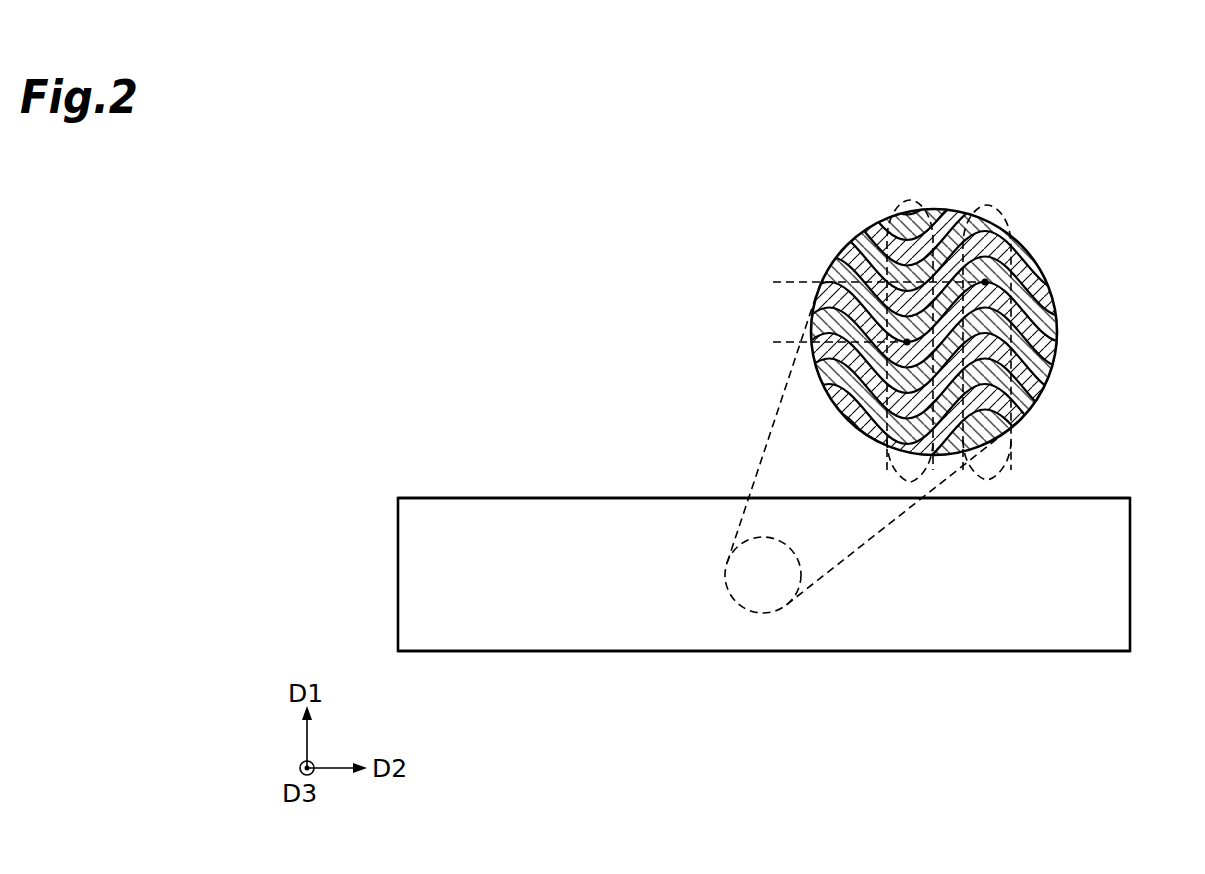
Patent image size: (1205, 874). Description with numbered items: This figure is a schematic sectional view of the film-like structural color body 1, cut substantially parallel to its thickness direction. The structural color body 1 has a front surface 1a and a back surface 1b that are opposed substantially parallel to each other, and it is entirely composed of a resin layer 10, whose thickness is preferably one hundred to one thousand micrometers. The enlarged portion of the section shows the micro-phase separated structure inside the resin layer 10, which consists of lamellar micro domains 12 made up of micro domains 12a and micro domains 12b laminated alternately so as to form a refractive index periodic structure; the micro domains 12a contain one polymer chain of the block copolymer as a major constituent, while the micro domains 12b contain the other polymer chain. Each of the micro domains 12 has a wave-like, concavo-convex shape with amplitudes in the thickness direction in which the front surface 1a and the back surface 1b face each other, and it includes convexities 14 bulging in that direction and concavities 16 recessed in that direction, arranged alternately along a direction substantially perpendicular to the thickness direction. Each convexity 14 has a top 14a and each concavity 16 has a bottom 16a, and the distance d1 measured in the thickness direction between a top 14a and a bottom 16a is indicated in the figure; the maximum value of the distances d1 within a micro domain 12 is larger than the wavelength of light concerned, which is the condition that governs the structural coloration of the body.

The structural color body 1 is at (726, 487).
The front surface 1a is at (428, 498).
The back surface 1b is at (428, 651).
The resin layer 10 is at (410, 576).
The lamellar micro domains 12 is at (962, 332).
The micro domain 12a is at (1024, 252).
The micro domain 12b is at (1041, 277).
The convexity 14 is at (984, 206).
The top of convexity 14a is at (986, 280).
The concavity 16 is at (910, 202).
The bottom of concavity 16a is at (845, 417).
The distance between top and bottom d1 is at (788, 284).